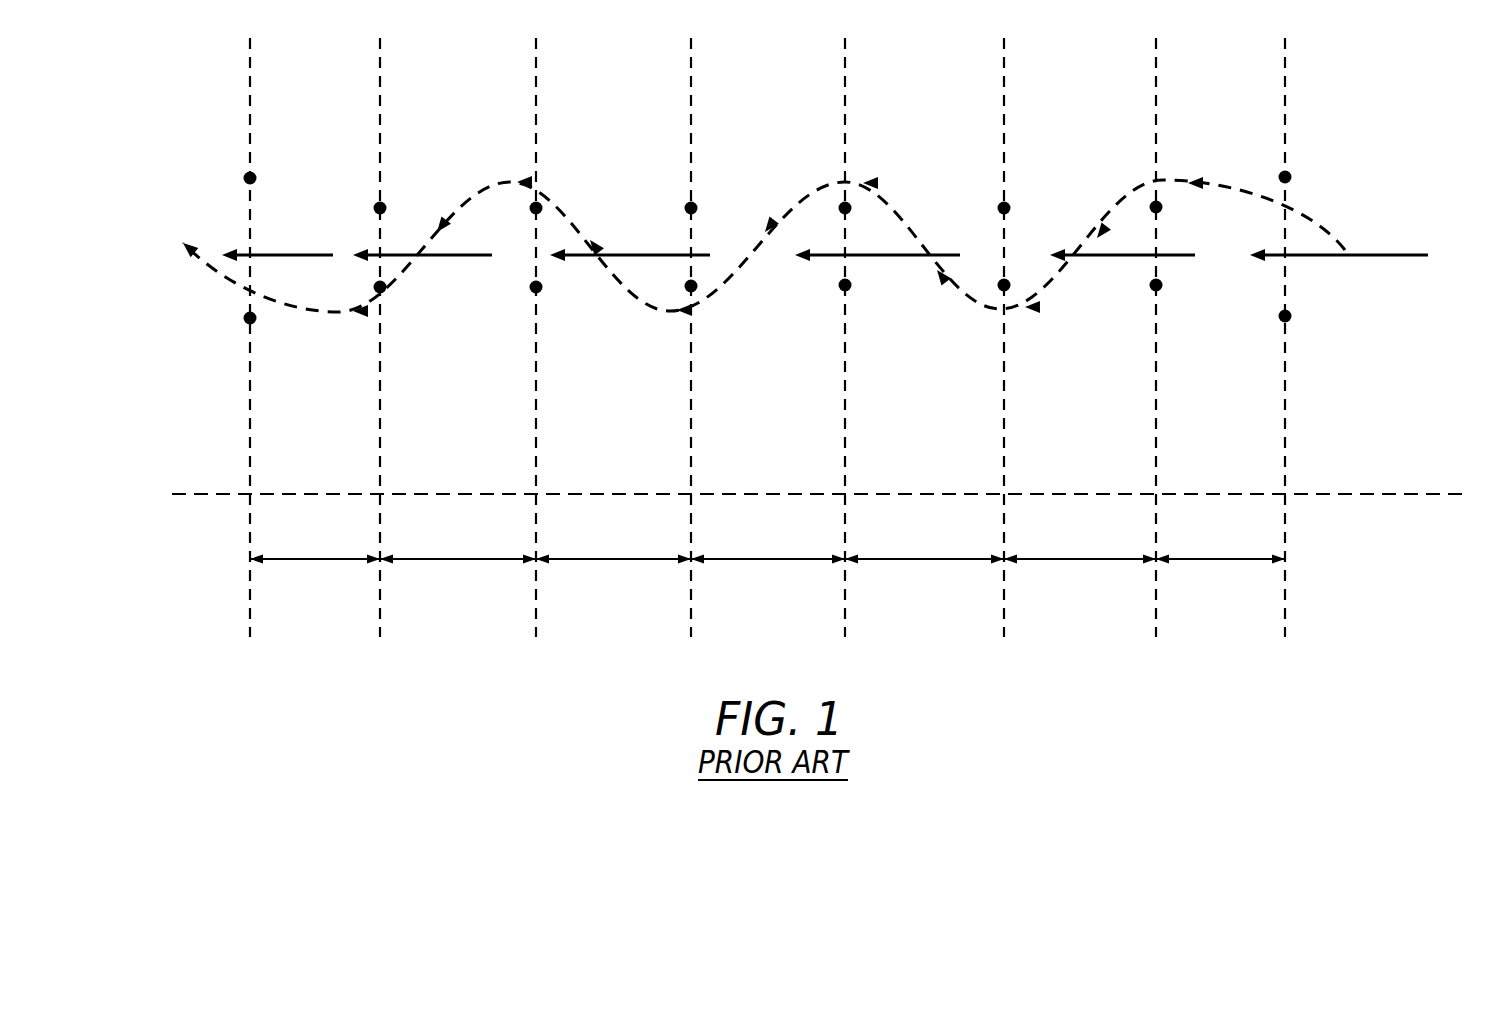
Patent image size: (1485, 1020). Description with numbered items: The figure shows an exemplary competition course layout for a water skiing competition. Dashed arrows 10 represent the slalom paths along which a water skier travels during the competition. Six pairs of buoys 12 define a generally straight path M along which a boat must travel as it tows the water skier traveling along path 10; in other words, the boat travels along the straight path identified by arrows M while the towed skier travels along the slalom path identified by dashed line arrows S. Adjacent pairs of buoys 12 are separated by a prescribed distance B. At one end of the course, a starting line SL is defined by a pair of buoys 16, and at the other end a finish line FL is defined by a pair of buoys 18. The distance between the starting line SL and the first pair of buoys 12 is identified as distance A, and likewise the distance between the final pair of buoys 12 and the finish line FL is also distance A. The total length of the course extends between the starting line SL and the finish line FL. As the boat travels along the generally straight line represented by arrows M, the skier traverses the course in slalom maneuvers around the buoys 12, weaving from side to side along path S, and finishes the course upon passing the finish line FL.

The dashed arrows 10 is at (730, 291).
The pairs of buoys 12 is at (386, 208).
The pair of buoys 16 is at (1291, 318).
The pair of buoys 18 is at (256, 322).
The finish line FL is at (251, 104).
The starting line SL is at (1286, 80).
The path S is at (1200, 180).
The path M is at (450, 257).
The distance A is at (313, 562).
The distance B is at (458, 562).